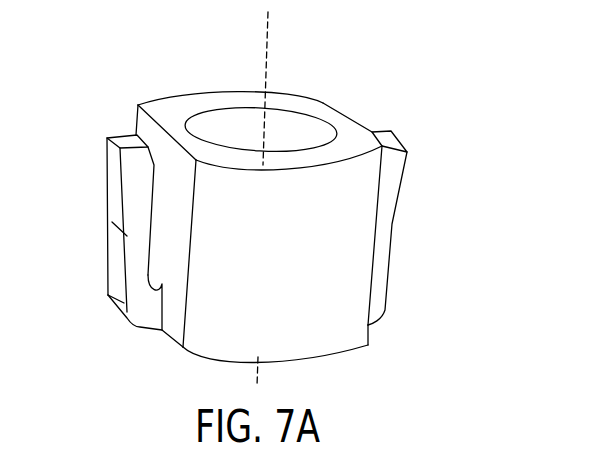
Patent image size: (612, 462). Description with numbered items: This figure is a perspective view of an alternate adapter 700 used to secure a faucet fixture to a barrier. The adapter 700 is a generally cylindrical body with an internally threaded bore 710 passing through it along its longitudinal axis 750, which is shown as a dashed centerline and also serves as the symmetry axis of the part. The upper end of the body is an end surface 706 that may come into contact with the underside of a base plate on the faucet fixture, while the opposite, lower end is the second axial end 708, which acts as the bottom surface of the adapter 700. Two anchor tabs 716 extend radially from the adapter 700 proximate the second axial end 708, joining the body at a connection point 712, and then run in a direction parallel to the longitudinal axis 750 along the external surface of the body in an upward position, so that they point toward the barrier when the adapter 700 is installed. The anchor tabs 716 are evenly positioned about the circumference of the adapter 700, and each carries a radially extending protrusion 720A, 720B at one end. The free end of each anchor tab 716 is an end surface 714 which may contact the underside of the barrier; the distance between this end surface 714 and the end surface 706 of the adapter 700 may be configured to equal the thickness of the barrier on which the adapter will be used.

The adapter 700 is at (343, 72).
The end surface 706 is at (348, 120).
The second axial end 708 is at (348, 353).
The internally threaded bore 710 is at (245, 119).
The connection point 712 is at (163, 303).
The end surface of the anchor tab 714 is at (123, 142).
The anchor tab 716 is at (122, 306).
The radially extending protrusion 720A is at (393, 183).
The radially extending protrusion 720B is at (122, 205).
The longitudinal axis 750 is at (262, 32).